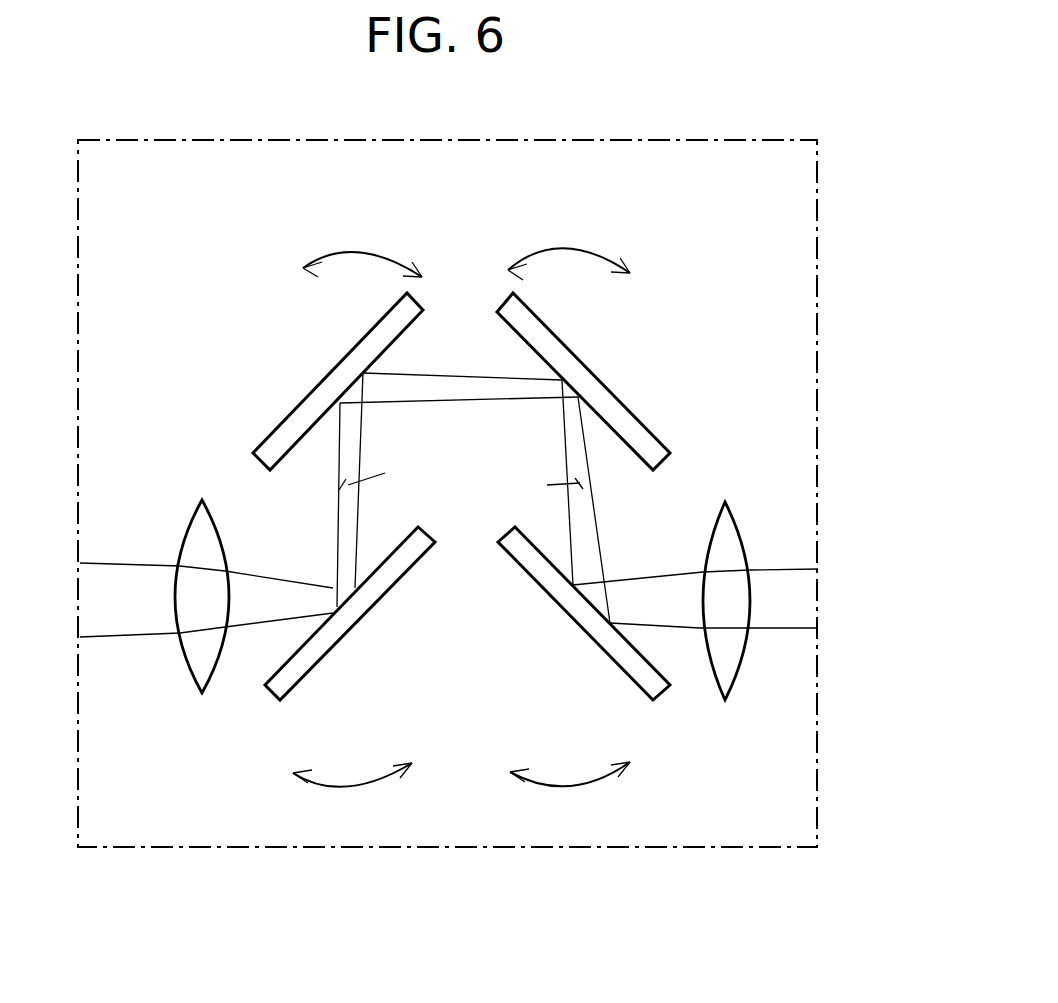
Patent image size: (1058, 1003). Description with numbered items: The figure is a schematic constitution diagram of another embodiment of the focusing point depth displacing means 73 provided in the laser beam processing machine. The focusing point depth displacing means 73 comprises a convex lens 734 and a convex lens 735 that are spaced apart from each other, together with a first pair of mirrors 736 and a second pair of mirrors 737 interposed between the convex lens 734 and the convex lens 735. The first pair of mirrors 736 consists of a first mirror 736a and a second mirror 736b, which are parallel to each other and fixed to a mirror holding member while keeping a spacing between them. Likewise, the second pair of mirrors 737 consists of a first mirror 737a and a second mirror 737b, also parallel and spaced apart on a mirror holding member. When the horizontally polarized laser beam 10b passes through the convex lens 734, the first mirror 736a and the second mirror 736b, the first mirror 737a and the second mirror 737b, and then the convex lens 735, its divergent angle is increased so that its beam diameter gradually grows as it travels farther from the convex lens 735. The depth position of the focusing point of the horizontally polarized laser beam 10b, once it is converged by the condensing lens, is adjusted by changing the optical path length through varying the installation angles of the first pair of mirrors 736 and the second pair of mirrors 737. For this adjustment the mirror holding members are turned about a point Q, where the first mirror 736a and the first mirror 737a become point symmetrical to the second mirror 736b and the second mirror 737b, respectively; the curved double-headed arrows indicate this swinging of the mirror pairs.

The focusing point depth displacing means 73 is at (818, 327).
The convex lens 734 is at (732, 533).
The convex lens 735 is at (218, 542).
The first pair of mirrors 736 is at (630, 496).
The first mirror 736a is at (627, 672).
The second mirror 736b is at (632, 427).
The second pair of mirrors 737 is at (306, 496).
The first mirror 737a is at (277, 438).
The second mirror 737b is at (297, 673).
The horizontally polarized laser beam 10b is at (770, 630).
The point Q is at (461, 480).